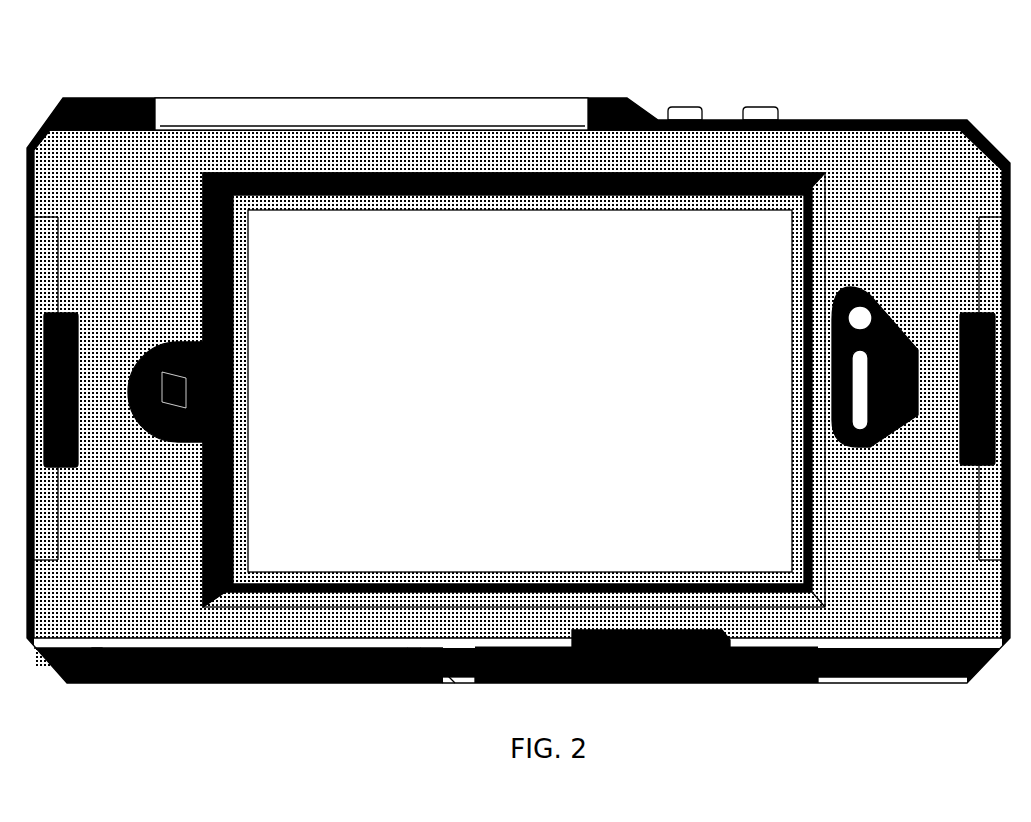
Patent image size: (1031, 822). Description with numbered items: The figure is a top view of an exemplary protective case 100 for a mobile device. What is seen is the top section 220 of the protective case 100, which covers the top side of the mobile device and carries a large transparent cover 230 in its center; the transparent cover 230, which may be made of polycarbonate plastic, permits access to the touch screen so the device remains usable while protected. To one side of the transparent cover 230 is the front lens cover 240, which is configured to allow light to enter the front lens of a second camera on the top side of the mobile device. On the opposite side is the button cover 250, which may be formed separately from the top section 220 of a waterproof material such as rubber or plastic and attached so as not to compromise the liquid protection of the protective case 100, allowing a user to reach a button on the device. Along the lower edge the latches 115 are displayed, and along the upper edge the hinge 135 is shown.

The protective case 100 is at (219, 57).
The latches 115 is at (735, 662).
The hinge 135 is at (519, 106).
The top section 220 is at (906, 145).
The transparent cover 230 is at (380, 370).
The front lens cover 240 is at (855, 340).
The button cover 250 is at (172, 405).